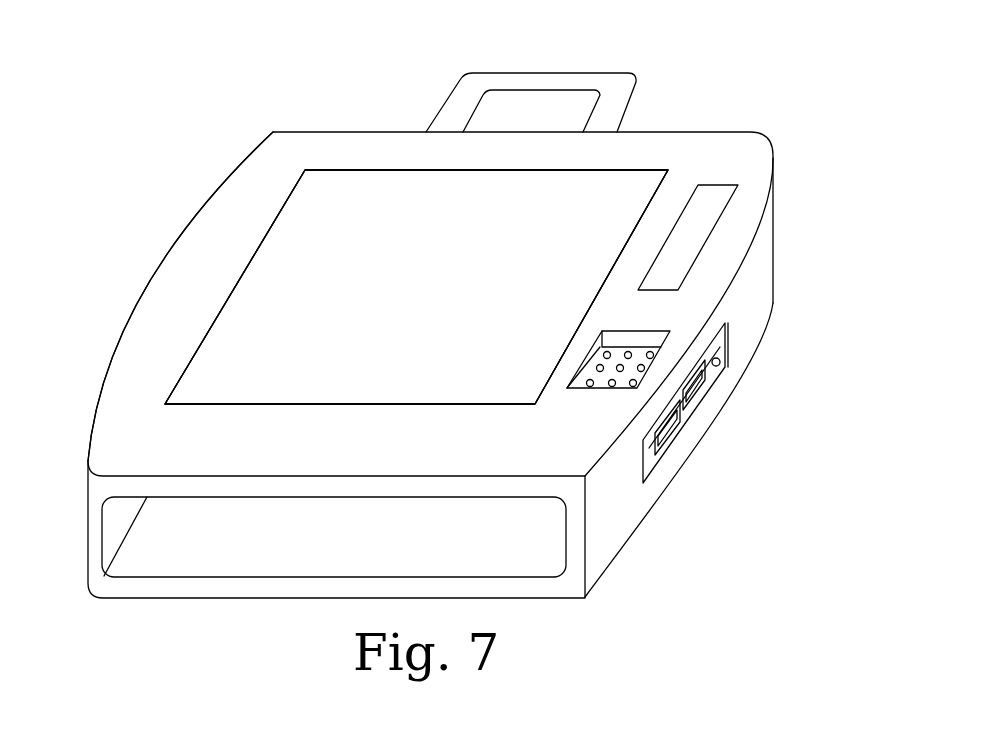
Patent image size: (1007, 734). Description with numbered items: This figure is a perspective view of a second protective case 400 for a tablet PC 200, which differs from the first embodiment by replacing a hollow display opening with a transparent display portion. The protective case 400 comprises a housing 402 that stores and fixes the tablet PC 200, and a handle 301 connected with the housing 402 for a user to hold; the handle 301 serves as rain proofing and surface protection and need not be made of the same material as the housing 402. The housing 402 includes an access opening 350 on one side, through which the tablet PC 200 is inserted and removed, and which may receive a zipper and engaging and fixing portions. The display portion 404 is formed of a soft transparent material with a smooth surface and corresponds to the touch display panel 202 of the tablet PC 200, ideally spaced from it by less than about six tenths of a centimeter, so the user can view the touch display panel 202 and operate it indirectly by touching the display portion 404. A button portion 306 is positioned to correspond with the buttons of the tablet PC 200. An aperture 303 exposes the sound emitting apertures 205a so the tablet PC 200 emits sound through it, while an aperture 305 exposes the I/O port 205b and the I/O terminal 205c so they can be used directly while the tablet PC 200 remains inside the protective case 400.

The protective case 400 is at (741, 88).
The housing 402 is at (177, 300).
The display portion 404 is at (310, 275).
The touch display panel 202 is at (333, 190).
The tablet PC 200 is at (617, 210).
The handle 301 is at (532, 80).
The button portion 306 is at (723, 217).
The aperture 303 is at (583, 389).
The sound emitting apertures 205a is at (612, 386).
The aperture 305 is at (657, 466).
The input/output port 205b is at (695, 390).
The input/output terminal 205c is at (718, 358).
The access opening 350 is at (177, 538).